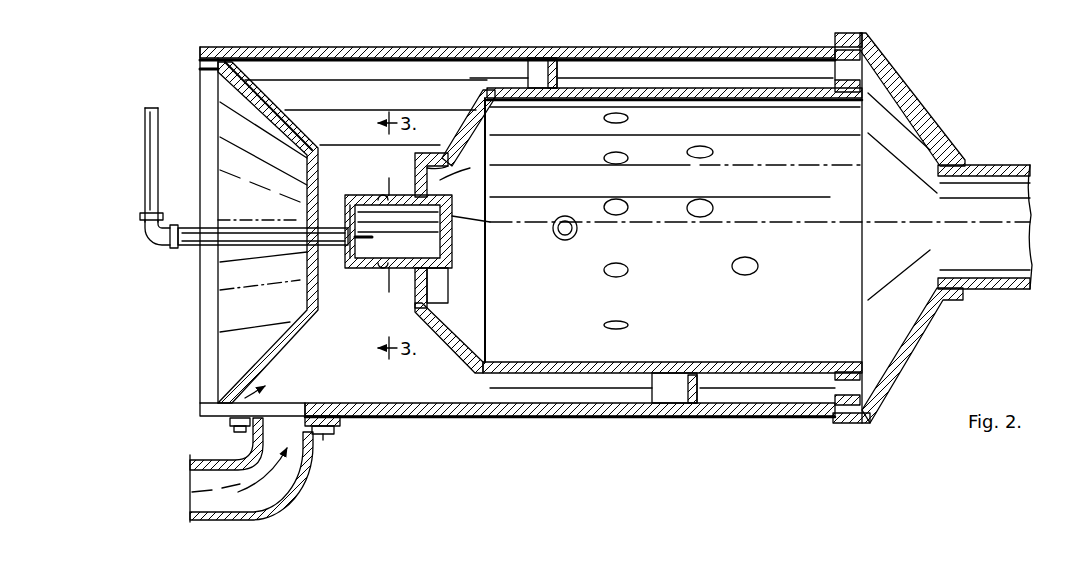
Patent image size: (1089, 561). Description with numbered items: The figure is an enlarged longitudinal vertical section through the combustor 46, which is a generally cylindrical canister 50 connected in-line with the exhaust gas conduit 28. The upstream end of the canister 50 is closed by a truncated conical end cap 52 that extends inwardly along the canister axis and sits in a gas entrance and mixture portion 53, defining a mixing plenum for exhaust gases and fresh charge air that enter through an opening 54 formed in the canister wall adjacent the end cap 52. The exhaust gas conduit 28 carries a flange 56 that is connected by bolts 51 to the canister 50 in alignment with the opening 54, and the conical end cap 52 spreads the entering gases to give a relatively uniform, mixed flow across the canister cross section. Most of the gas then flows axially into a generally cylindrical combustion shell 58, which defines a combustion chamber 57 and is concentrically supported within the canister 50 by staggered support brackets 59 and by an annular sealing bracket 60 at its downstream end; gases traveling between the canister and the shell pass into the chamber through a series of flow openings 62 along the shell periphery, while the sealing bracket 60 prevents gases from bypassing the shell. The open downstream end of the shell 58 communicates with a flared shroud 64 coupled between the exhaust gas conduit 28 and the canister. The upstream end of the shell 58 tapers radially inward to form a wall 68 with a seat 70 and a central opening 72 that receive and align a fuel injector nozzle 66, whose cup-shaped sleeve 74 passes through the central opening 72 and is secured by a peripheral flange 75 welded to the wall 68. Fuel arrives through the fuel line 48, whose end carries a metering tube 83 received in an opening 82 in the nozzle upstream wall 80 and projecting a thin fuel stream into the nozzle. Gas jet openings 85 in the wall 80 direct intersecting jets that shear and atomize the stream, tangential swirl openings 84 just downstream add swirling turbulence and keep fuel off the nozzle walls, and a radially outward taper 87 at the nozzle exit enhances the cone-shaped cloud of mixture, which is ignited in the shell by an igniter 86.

The exhaust gas conduit 28 is at (1025, 290).
The combustor 46 is at (592, 426).
The fuel line 48 is at (196, 228).
The canister 50 is at (490, 416).
The bolts 51 is at (325, 436).
The conical end cap 52 is at (288, 128).
The gas entrance and mixture portion 53 is at (228, 424).
The opening 54 is at (305, 410).
The flange 56 is at (335, 430).
The combustion chamber 57 is at (468, 130).
The combustion shell 58 is at (650, 374).
The support brackets 59 is at (540, 58).
The annular sealing bracket 60 is at (840, 48).
The flow openings 62 is at (608, 205).
The flared shroud 64 is at (900, 88).
The fuel injector nozzle 66 is at (368, 160).
The wall 68 is at (450, 158).
The seat 70 is at (448, 166).
The central opening 72 is at (448, 190).
The sleeve 74 is at (450, 270).
The peripheral flange 75 is at (420, 285).
The wall 80 is at (348, 212).
The opening 82 is at (350, 260).
The metering tube 83 is at (374, 239).
The tangential swirl openings 84 is at (383, 195).
The gas jet openings 85 is at (372, 279).
The igniter 86 is at (562, 216).
The radially outward taper 87 is at (452, 220).